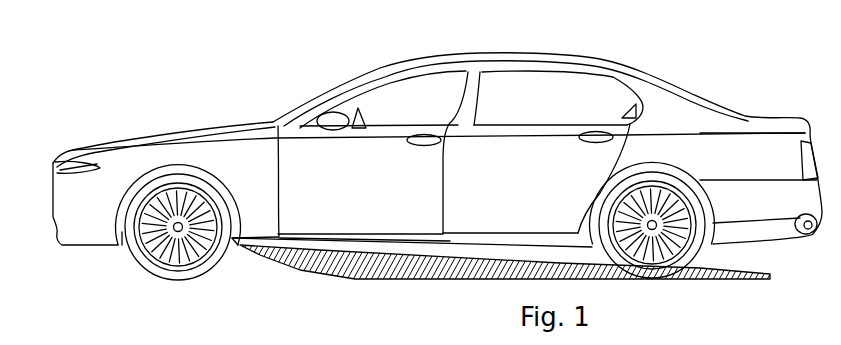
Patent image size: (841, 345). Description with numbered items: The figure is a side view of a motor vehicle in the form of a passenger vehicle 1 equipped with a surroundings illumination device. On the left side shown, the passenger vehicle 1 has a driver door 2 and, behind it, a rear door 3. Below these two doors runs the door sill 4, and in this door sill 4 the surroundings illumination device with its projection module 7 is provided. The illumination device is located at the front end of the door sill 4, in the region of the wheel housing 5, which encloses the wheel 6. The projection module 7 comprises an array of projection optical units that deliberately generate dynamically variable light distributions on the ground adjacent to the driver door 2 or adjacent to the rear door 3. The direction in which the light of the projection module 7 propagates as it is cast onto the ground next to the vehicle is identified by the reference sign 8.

The passenger vehicle 1 is at (704, 84).
The driver door 2 is at (383, 148).
The rear door 3 is at (507, 155).
The door sill 4 is at (320, 237).
The wheel housing 5 is at (175, 163).
The wheel 6 is at (167, 277).
The projection module 7 is at (268, 235).
The propagation direction of the light 8 is at (288, 275).